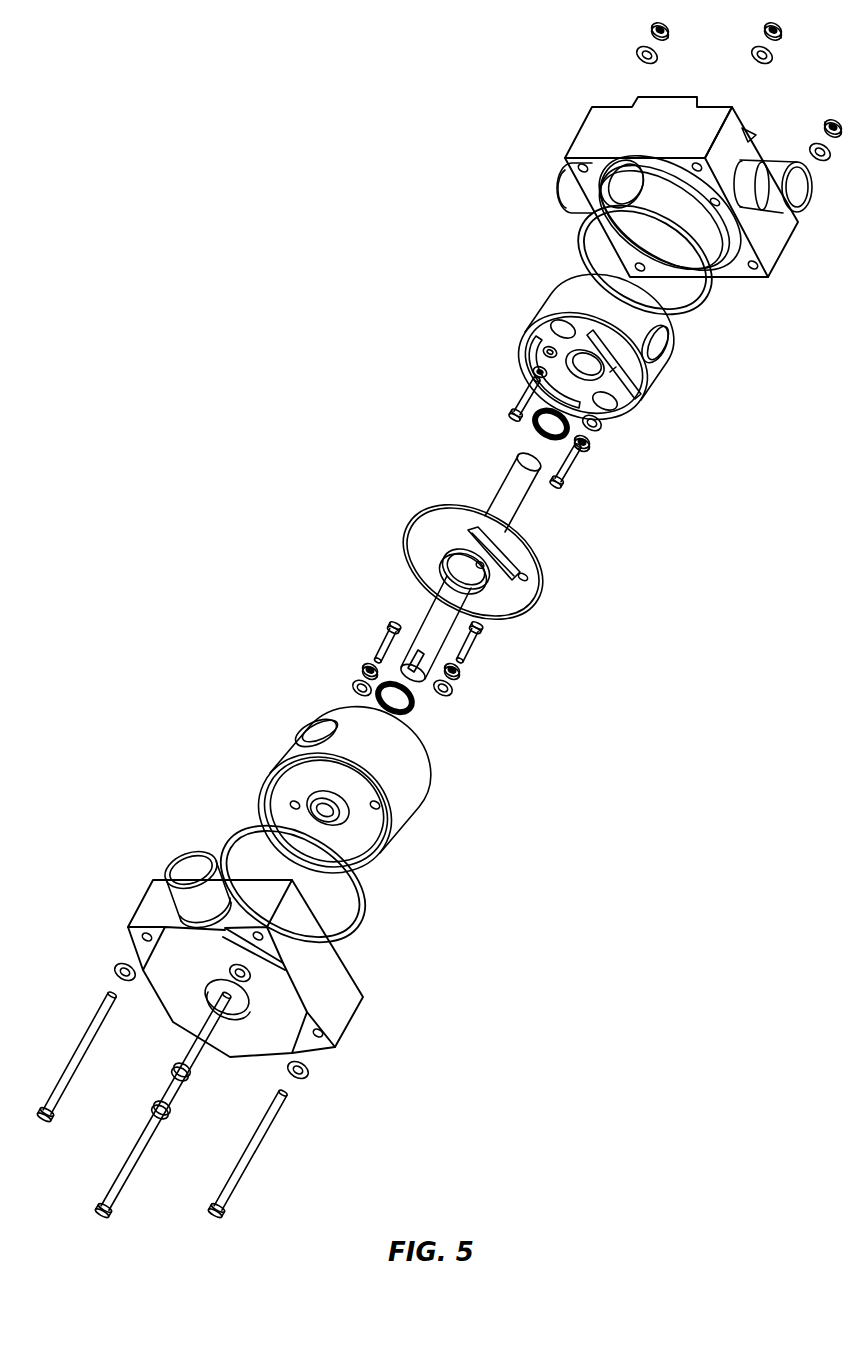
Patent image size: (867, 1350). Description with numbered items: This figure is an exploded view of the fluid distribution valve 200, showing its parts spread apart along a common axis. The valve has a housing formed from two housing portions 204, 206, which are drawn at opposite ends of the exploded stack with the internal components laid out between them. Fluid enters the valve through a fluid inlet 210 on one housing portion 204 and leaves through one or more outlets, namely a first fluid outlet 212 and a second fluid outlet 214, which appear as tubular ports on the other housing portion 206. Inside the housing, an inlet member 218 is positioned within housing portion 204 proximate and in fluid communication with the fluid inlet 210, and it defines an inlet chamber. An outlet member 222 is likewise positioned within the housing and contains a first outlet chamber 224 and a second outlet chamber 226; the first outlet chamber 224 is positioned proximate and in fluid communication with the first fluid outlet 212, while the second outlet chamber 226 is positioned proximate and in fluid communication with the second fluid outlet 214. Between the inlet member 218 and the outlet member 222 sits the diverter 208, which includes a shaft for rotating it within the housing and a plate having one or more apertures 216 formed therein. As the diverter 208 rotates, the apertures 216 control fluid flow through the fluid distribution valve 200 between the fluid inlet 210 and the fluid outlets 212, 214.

The fluid distribution valve 200 is at (150, 42).
The housing portion 204 is at (343, 1002).
The housing portion 206 is at (738, 152).
The diverter 208 is at (504, 592).
The fluid inlet 210 is at (203, 885).
The first fluid outlet 212 is at (770, 195).
The second fluid outlet 214 is at (566, 178).
The apertures 216 is at (523, 578).
The inlet member 218 is at (295, 742).
The outlet member 222 is at (572, 338).
The first outlet chamber 224 is at (636, 397).
The second outlet chamber 226 is at (530, 344).